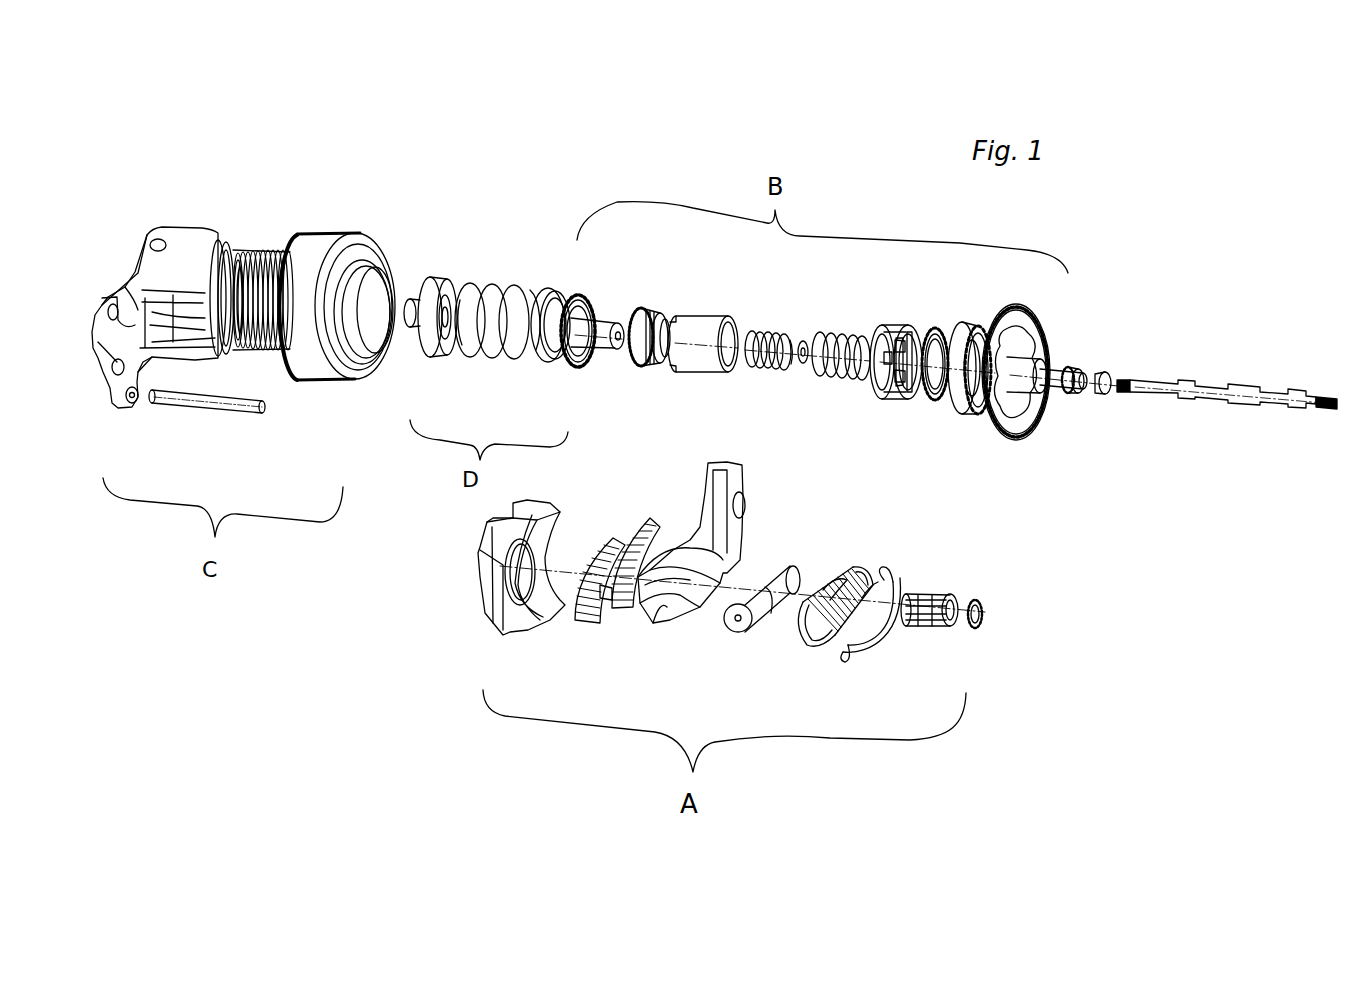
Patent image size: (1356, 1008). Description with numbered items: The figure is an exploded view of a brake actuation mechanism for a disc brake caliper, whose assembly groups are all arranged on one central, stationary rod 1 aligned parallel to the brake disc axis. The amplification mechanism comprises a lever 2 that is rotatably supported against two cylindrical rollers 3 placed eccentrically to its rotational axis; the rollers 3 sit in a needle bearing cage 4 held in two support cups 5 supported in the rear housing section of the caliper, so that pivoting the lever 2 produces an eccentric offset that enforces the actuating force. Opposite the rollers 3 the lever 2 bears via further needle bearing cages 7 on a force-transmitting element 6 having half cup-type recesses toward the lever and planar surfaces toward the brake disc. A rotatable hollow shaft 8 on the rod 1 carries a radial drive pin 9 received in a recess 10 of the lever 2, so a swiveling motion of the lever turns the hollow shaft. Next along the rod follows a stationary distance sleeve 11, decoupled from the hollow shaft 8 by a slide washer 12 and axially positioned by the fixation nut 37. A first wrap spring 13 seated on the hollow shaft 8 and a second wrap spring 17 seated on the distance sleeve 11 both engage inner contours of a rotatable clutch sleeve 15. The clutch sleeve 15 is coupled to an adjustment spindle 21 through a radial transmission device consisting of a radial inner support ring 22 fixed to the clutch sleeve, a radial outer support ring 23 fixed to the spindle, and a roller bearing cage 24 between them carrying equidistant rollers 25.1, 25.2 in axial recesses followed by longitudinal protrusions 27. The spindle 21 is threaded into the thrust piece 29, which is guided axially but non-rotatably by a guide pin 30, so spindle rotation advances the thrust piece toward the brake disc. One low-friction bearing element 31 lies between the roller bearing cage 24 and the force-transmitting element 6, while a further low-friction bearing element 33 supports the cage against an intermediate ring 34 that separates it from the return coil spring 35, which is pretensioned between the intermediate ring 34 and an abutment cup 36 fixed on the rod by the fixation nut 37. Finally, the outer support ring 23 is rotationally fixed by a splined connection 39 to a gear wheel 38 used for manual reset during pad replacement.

The rod 1 is at (1212, 398).
The lever 2 is at (709, 571).
The rollers 3 is at (797, 572).
The needle bearing cage 4 is at (858, 562).
The support cups 5 is at (898, 585).
The force-transmitting element 6 is at (500, 628).
The needle bearing cages 7 is at (598, 615).
The hollow shaft 8 is at (1025, 370).
The drive pin 9 is at (1070, 394).
The recess 10 is at (690, 615).
The distance sleeve 11 is at (601, 330).
The slide washer 12 is at (803, 340).
The first wrap spring 13 is at (841, 343).
The clutch sleeve 15 is at (700, 353).
The second wrap spring 17 is at (757, 333).
The adjustment spindle 21 is at (388, 287).
The radial inner support ring 22 is at (641, 365).
The radial outer support ring 23 is at (966, 407).
The roller bearing cage 24 is at (888, 356).
The rollers 25.1 is at (893, 335).
The rollers 25.2 is at (922, 347).
The longitudinal protrusions 27 is at (916, 356).
The thrust piece 29 is at (184, 265).
The guide pin 30 is at (203, 410).
The low-friction bearing element 31 is at (930, 400).
The low-friction bearing element 33 is at (584, 368).
The intermediate ring 34 is at (545, 362).
The return coil spring 35 is at (497, 302).
The abutment cup 36 is at (440, 348).
The fixation nut 37 is at (373, 391).
The gear wheel 38 is at (1046, 349).
The splined connection 39 is at (984, 330).